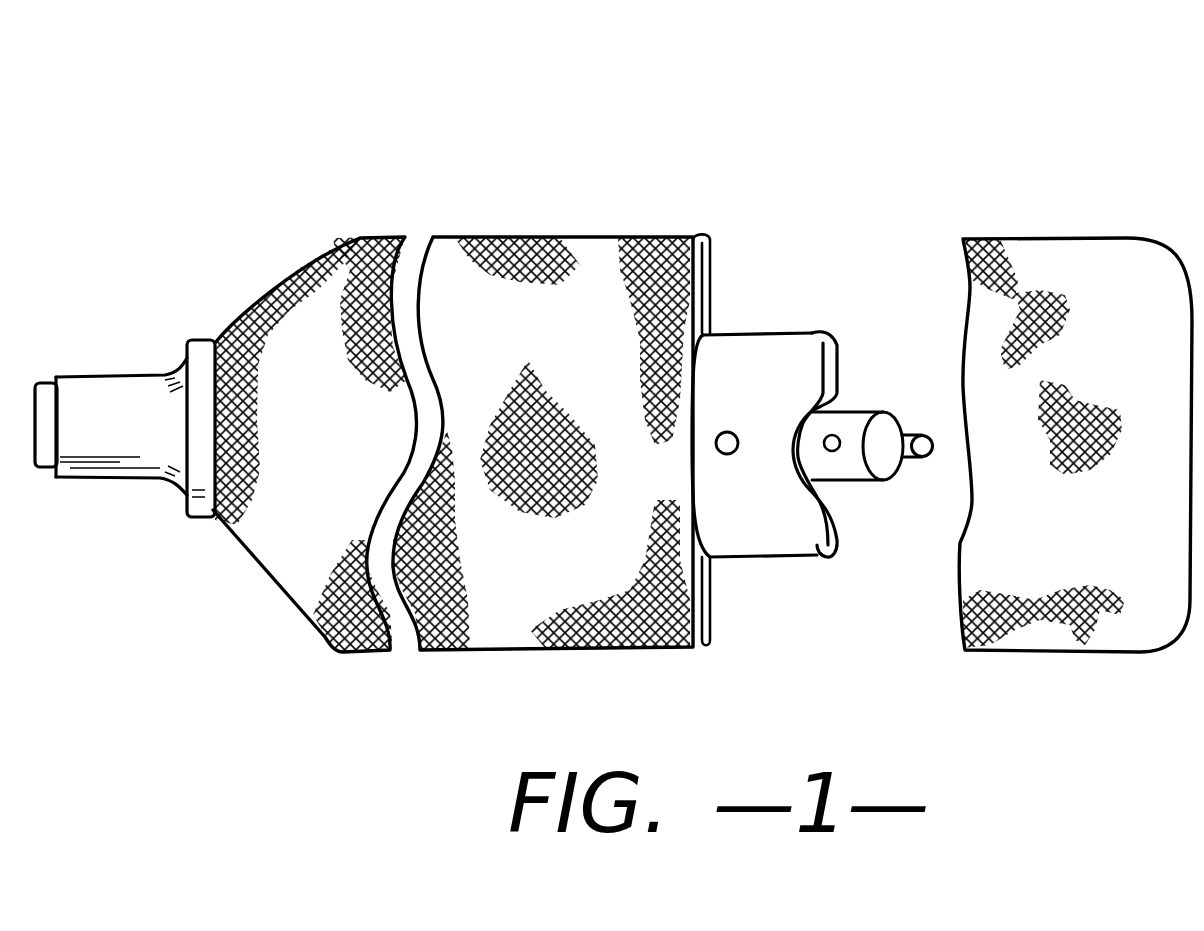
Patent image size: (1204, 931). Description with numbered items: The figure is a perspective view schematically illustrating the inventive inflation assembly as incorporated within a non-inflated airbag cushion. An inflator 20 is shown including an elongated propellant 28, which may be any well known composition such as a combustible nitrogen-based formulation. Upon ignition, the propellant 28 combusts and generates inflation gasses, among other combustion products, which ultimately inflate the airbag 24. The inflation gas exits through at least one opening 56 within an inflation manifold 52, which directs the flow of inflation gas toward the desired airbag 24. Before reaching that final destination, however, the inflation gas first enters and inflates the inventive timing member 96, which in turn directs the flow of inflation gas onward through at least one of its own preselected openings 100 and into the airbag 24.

The inflator 20 is at (810, 187).
The airbag 24 is at (602, 257).
The timing member 96 is at (745, 333).
The inflation manifold 52 is at (862, 410).
The elongated propellant 28 is at (913, 427).
The opening 56 is at (838, 449).
The preselected opening 100 is at (734, 452).